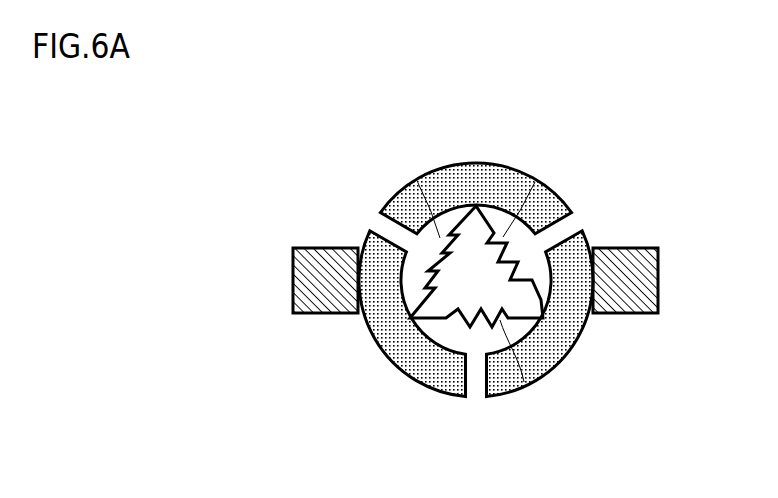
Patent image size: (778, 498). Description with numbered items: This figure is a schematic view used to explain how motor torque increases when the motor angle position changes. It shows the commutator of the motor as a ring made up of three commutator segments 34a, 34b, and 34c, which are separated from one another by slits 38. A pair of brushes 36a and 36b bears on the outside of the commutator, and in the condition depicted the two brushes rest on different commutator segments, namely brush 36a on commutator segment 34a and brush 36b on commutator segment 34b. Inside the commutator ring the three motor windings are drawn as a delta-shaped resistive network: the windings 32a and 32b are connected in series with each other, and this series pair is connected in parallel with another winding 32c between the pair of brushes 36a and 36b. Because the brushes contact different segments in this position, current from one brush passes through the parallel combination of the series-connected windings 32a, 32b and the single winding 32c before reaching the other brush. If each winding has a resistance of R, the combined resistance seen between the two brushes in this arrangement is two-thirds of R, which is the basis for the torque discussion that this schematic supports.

The winding 32a is at (407, 183).
The winding 32b is at (543, 183).
The winding 32c is at (524, 382).
The commutator segment 34a is at (577, 345).
The commutator segment 34b is at (378, 345).
The commutator segment 34c is at (474, 170).
The brush 36a is at (658, 275).
The brush 36b is at (293, 275).
The slit 38 is at (380, 222).